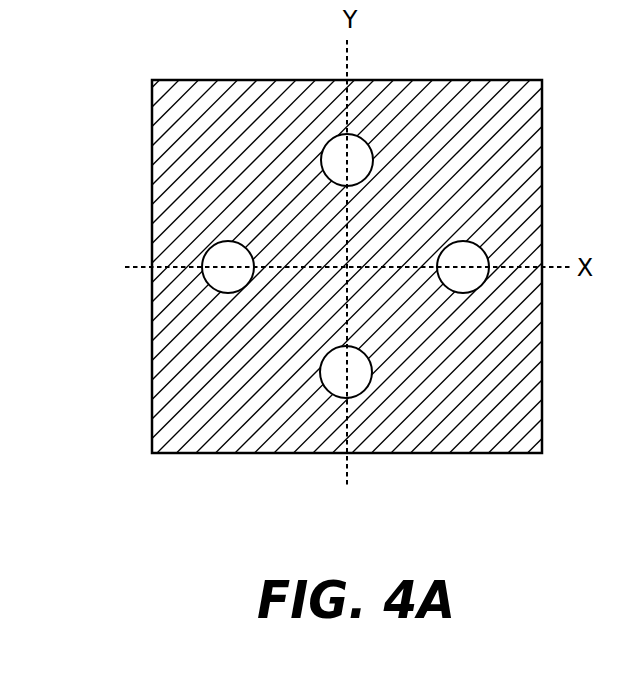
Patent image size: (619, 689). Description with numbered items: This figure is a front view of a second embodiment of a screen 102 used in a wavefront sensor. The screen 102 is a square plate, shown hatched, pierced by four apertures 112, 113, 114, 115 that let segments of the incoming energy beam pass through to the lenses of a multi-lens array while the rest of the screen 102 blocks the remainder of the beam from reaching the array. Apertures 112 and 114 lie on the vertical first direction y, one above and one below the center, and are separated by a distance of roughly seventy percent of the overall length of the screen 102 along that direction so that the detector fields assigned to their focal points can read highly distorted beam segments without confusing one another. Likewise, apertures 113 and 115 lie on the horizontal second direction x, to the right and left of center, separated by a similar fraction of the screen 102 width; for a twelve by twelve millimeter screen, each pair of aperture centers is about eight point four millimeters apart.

The screen 102 is at (268, 100).
The aperture 112 is at (355, 158).
The aperture 113 is at (468, 257).
The aperture 114 is at (355, 373).
The aperture 115 is at (232, 258).